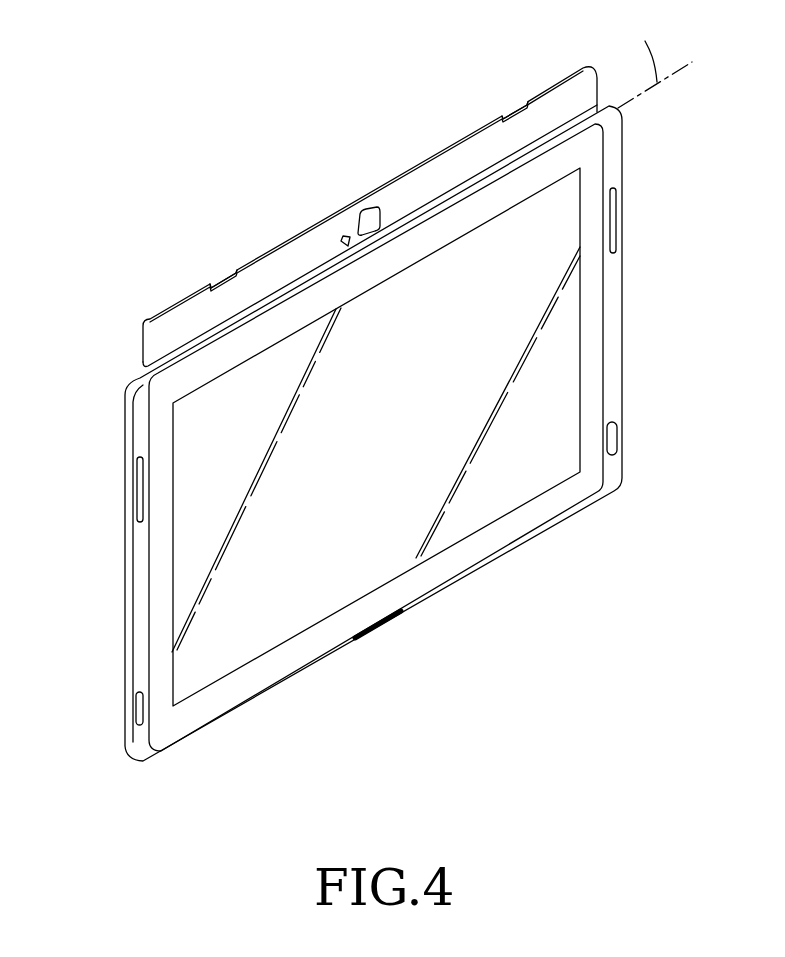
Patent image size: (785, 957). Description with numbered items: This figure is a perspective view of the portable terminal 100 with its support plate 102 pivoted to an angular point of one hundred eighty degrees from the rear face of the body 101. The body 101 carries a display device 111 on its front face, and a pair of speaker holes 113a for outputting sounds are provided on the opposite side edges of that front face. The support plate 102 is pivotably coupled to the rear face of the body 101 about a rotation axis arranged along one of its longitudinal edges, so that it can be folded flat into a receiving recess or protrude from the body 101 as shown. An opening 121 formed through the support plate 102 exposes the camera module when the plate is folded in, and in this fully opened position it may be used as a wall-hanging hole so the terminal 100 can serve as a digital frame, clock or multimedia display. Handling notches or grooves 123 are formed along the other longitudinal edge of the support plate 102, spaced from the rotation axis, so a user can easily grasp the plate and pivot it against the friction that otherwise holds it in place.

The portable terminal 100 is at (244, 116).
The body 101 is at (634, 348).
The support plate 102 is at (160, 323).
The display device 111 is at (498, 503).
The speaker holes 113a is at (143, 497).
The opening 121 is at (367, 214).
The handling notches or grooves 123 is at (221, 283).